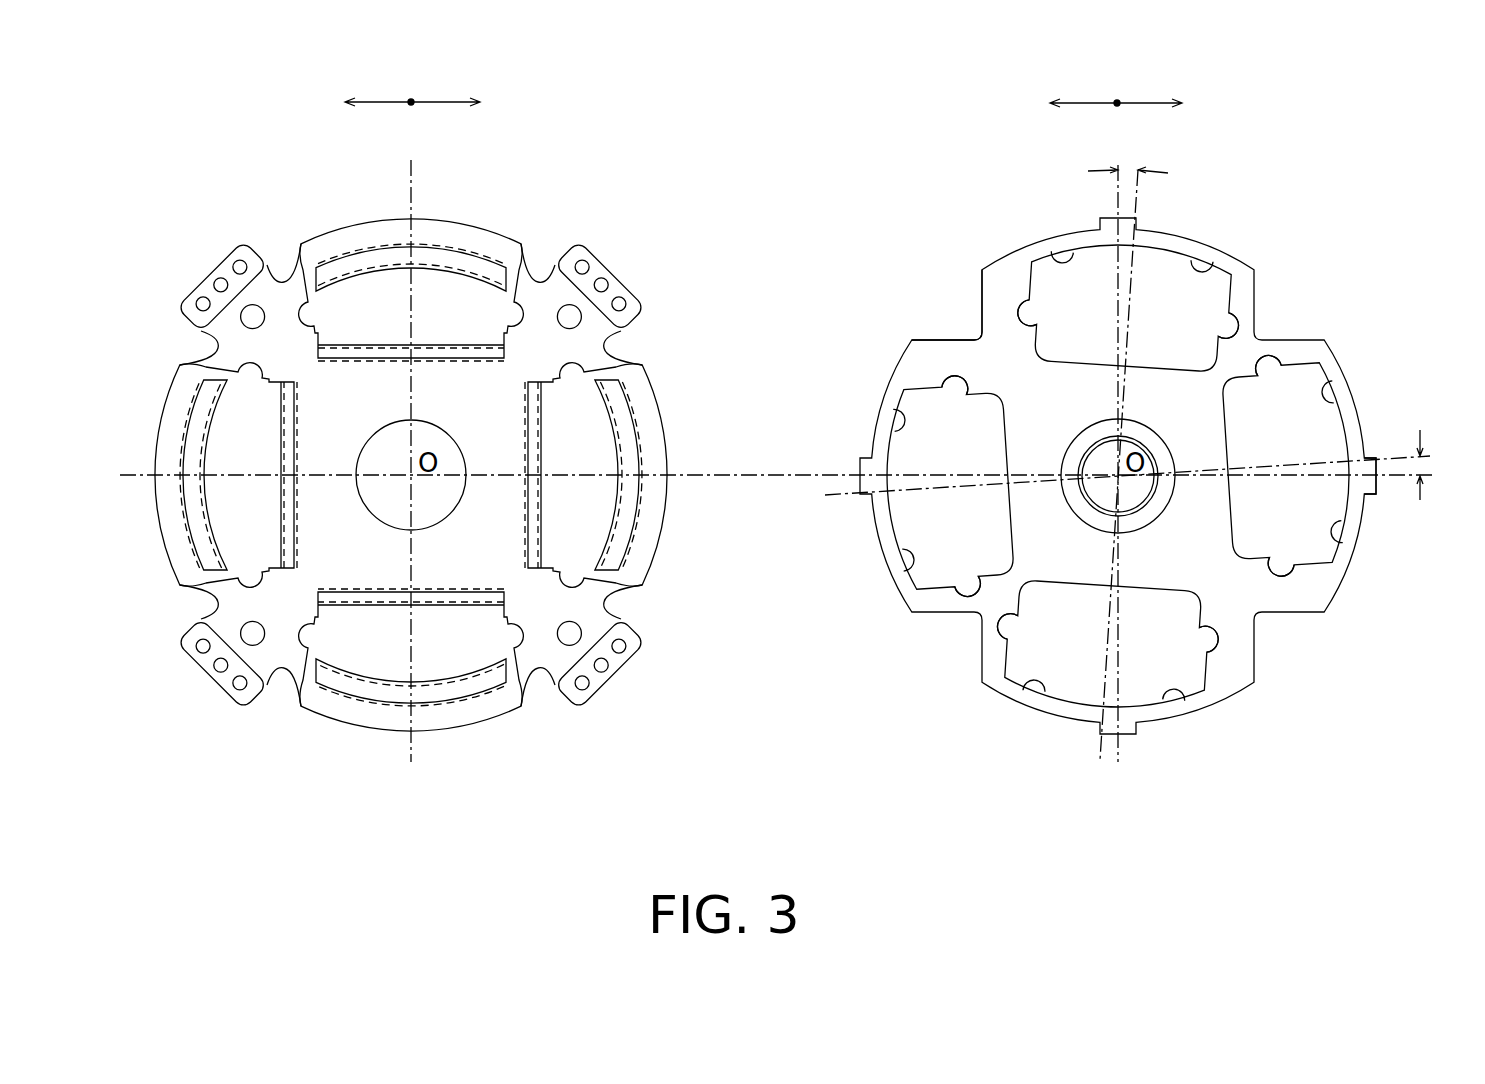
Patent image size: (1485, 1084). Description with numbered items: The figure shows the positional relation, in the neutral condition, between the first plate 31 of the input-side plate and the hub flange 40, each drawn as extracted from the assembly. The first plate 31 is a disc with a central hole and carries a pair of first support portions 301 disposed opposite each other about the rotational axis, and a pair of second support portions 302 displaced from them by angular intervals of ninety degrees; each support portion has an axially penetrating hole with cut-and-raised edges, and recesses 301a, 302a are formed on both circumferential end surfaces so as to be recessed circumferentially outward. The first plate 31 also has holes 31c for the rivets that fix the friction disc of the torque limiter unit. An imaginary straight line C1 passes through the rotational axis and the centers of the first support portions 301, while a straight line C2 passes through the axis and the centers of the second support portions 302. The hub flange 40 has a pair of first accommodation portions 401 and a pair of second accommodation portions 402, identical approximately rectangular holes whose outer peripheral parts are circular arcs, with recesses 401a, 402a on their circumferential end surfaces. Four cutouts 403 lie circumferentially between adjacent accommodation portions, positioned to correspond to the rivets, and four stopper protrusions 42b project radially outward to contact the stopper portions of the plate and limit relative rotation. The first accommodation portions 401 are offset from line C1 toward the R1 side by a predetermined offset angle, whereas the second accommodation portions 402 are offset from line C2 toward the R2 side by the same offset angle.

The first plate 31 is at (577, 163).
The first support portions 301 is at (358, 287).
The recesses 301a is at (330, 292).
The second support portions 302 is at (638, 457).
The recesses 302a is at (596, 390).
The holes 31c is at (575, 318).
The hub flange 40 is at (1243, 188).
The first accommodation portions 401 is at (1212, 265).
The recesses 401a is at (1042, 282).
The second accommodation portions 402 is at (1325, 405).
The recesses 402a is at (1290, 366).
The cutouts 403 is at (970, 313).
The stopper protrusions 42b is at (1372, 488).
The straight line C1 is at (428, 185).
The straight line C2 is at (768, 471).
The first side in rotational direction R1 is at (802, 86).
The second side in rotational direction R2 is at (729, 86).